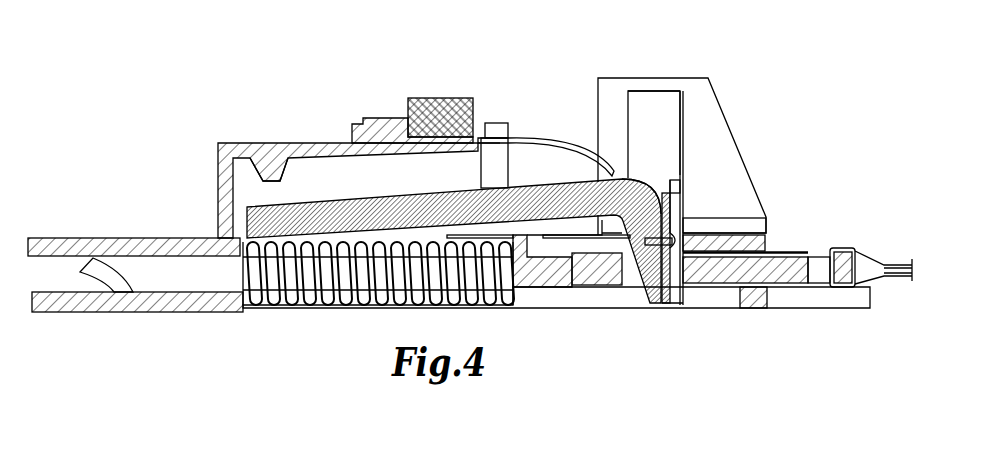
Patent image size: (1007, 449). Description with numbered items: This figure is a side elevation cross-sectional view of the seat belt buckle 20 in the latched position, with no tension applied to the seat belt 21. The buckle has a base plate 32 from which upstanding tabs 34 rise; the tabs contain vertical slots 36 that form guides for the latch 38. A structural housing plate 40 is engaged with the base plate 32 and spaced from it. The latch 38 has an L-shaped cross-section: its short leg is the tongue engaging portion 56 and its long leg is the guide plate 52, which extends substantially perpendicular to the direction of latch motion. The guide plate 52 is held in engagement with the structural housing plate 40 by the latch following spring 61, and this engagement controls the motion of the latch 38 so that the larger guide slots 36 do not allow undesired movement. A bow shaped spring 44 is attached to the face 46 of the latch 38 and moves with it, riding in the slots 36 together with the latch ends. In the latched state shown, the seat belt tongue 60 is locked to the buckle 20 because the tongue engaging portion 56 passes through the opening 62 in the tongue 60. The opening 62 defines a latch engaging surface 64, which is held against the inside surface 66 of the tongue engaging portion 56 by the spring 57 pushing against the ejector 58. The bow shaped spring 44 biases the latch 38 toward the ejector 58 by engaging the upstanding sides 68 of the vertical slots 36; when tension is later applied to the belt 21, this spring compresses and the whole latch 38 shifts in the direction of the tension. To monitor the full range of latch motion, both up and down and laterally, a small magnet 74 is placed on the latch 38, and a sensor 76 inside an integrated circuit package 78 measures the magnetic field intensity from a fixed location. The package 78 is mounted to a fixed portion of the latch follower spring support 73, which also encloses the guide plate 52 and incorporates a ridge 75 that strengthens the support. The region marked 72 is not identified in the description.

The seat belt buckle 20 is at (242, 93).
The seat belt 21 is at (873, 252).
The base plate 32 is at (153, 313).
The upstanding tabs 34 is at (720, 100).
The vertical slots 36 is at (665, 92).
The latch 38 is at (642, 178).
The structural housing plate 40 is at (115, 238).
The bow shaped spring 44 is at (678, 205).
The face of the latch 46 is at (678, 224).
The guide plate 52 is at (335, 198).
The tongue engaging portion 56 is at (646, 244).
The spring 57 is at (363, 306).
The ejector 58 is at (556, 290).
The seat belt tongue 60 is at (803, 252).
The latch following spring 61 is at (548, 140).
The opening 62 is at (680, 307).
The latch engaging surface 64 is at (668, 305).
The inside surface 66 is at (600, 290).
The upstanding sides 68 is at (679, 118).
The stop plate 72 is at (503, 222).
The latch follower spring support 73 is at (280, 142).
The magnet 74 is at (495, 122).
The ridge 75 is at (277, 182).
The sensor 76 is at (453, 98).
The integrated circuit package 78 is at (405, 116).